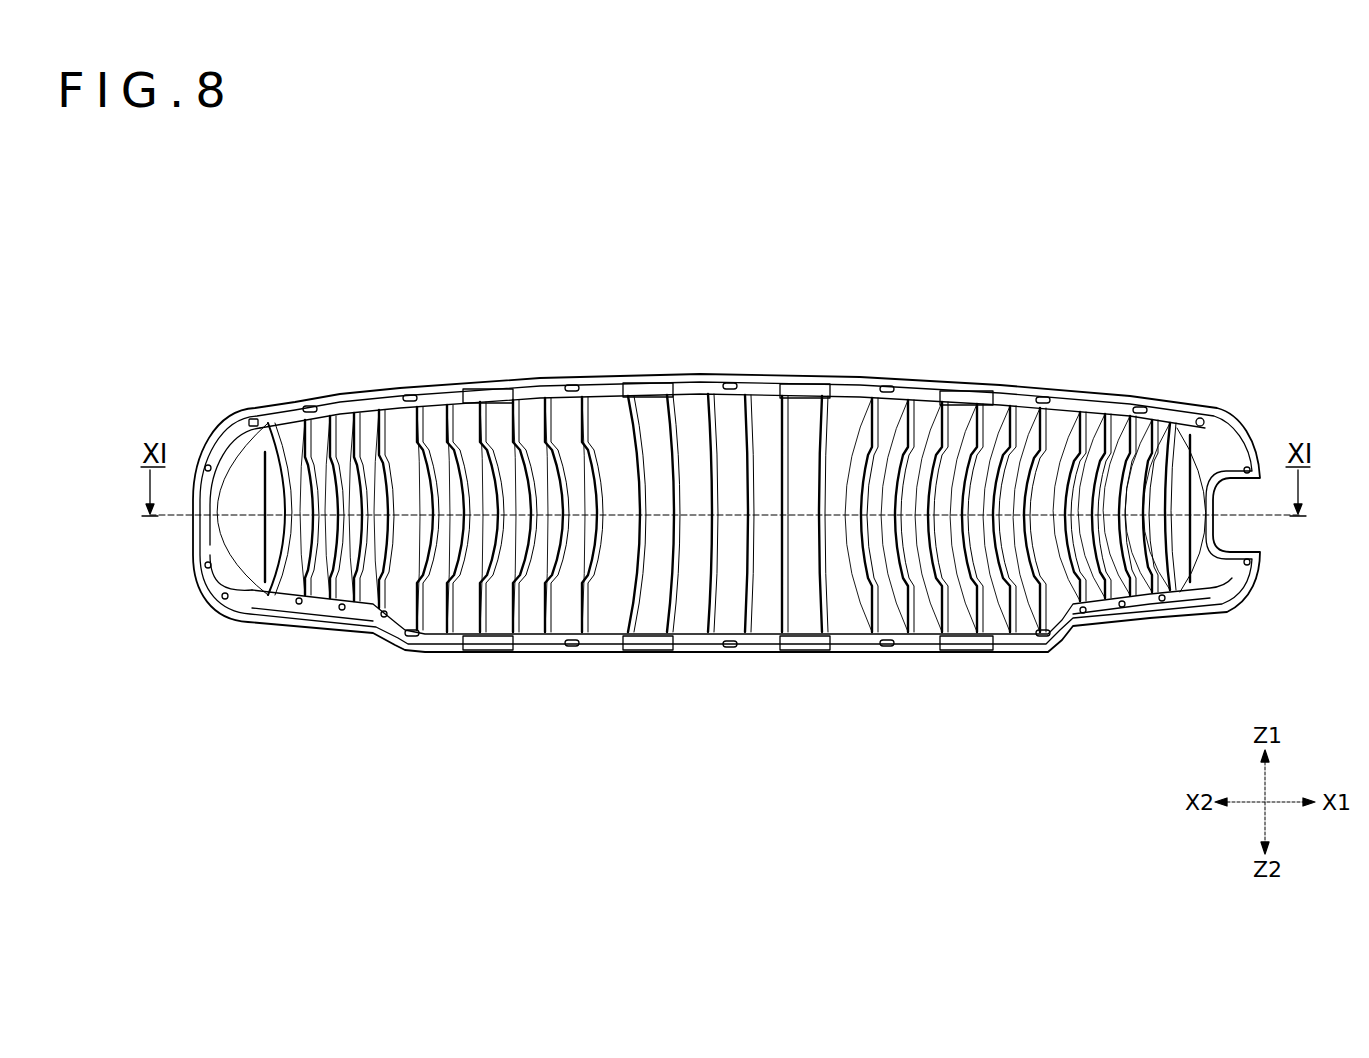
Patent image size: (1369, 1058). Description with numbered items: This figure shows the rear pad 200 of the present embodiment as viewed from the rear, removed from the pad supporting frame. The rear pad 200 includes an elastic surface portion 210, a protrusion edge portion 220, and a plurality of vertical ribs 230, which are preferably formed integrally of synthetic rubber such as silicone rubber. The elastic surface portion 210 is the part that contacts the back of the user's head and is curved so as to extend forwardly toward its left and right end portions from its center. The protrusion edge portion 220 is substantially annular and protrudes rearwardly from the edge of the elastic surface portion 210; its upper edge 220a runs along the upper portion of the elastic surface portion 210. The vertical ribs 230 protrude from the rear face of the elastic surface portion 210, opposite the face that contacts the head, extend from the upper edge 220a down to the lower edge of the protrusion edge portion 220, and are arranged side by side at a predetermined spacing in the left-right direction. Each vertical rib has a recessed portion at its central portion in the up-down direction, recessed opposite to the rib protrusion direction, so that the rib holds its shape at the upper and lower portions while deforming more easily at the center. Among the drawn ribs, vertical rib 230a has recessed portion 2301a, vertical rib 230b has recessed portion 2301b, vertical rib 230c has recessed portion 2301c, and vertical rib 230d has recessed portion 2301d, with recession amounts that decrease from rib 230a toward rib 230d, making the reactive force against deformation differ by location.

The rear pad 200 is at (1153, 377).
The elastic surface portion 210 is at (689, 420).
The protrusion edge portion 220 is at (781, 387).
The upper edge 220a is at (641, 386).
The vertical rib 230 is at (718, 614).
The vertical rib 230a is at (667, 620).
The vertical rib 230b is at (527, 605).
The vertical rib 230c is at (398, 587).
The vertical rib 230d is at (263, 562).
The recessed portion 2301a is at (630, 580).
The recessed portion 2301b is at (513, 577).
The recessed portion 2301c is at (388, 560).
The recessed portion 2301d is at (258, 492).